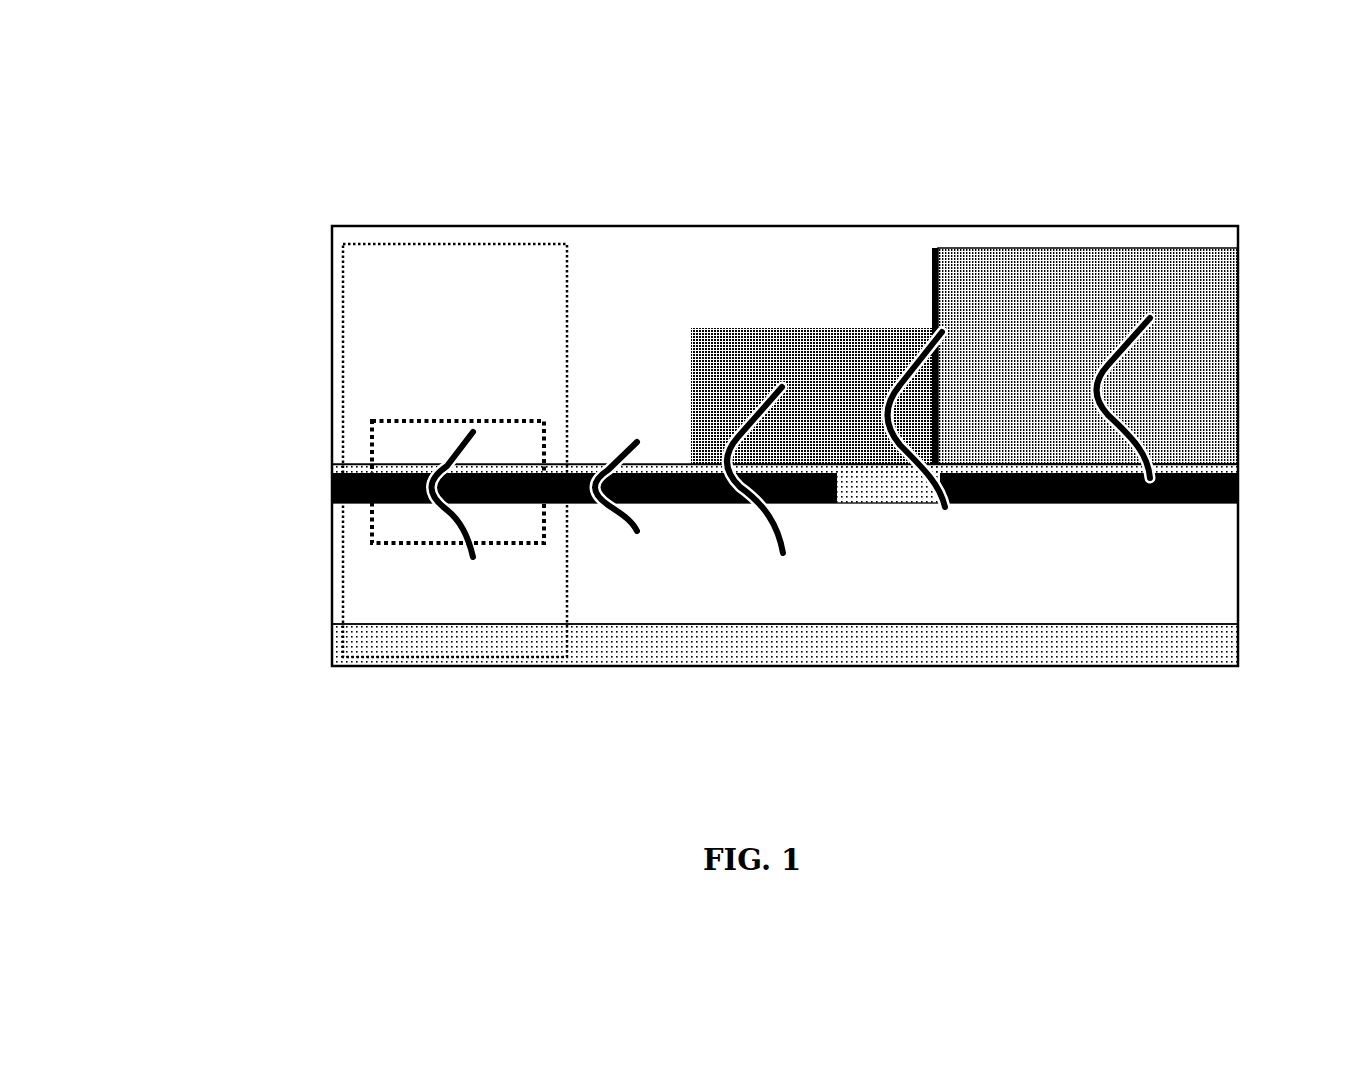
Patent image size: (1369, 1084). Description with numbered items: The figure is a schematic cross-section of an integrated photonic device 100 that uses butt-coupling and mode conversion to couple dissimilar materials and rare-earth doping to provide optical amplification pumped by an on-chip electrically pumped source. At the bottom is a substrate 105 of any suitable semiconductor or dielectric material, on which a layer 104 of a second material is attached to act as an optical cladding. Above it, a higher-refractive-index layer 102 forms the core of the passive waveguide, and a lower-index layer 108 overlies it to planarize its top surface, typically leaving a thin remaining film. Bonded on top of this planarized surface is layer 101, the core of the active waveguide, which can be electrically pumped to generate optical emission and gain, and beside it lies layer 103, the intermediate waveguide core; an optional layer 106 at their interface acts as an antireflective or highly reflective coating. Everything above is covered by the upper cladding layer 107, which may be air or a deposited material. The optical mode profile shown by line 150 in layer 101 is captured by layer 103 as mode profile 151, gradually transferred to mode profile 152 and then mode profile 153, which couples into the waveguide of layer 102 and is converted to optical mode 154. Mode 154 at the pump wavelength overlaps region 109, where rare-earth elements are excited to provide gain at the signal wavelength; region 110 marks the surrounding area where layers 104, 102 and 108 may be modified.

The integrated photonic device 100 is at (190, 179).
The layer 101 is at (1238, 355).
The layer 102 is at (332, 488).
The layer 103 is at (810, 328).
The layer 104 is at (332, 555).
The substrate 105 is at (332, 636).
The layer 106 is at (935, 250).
The upper cladding layer 107 is at (332, 357).
The layer 108 is at (350, 465).
The region 109 is at (487, 420).
The region 110 is at (381, 241).
The line 150 is at (1152, 318).
The mode profile 151 is at (947, 510).
The mode profile 152 is at (788, 557).
The mode profile 153 is at (640, 532).
The optical mode 154 is at (477, 540).